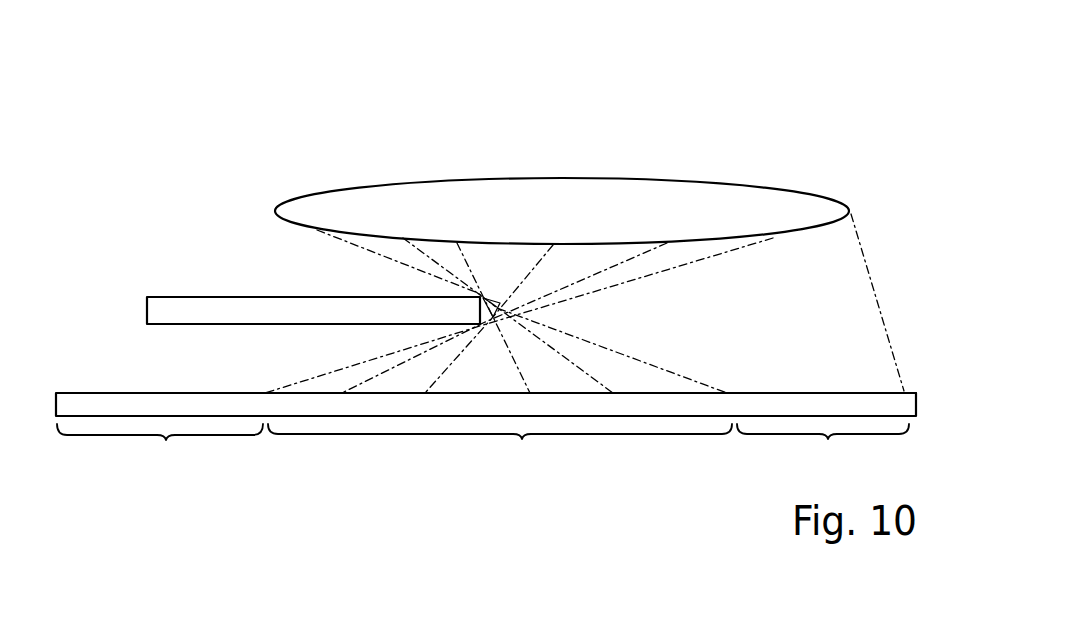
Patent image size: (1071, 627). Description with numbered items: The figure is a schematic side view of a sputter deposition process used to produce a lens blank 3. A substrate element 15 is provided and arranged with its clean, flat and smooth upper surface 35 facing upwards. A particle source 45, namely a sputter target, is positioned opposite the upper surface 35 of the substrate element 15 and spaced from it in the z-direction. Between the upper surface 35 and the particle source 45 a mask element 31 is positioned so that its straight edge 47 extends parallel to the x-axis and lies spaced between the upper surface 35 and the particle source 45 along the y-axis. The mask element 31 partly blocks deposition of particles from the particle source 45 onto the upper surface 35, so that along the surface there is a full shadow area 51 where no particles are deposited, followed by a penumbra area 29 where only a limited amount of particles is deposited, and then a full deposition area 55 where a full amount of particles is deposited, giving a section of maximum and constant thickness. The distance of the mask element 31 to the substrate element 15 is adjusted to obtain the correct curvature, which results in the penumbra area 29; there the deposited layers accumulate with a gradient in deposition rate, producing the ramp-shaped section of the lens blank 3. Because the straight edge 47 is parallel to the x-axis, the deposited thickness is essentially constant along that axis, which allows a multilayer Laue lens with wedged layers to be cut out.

The lens blank 3 is at (811, 153).
The substrate element 15 is at (855, 406).
The penumbra area 29 is at (500, 447).
The mask element 31 is at (225, 310).
The upper surface 35 is at (250, 393).
The particle source 45 is at (556, 196).
The straight edge 47 is at (486, 303).
The full shadow area 51 is at (160, 447).
The full deposition area 55 is at (823, 447).